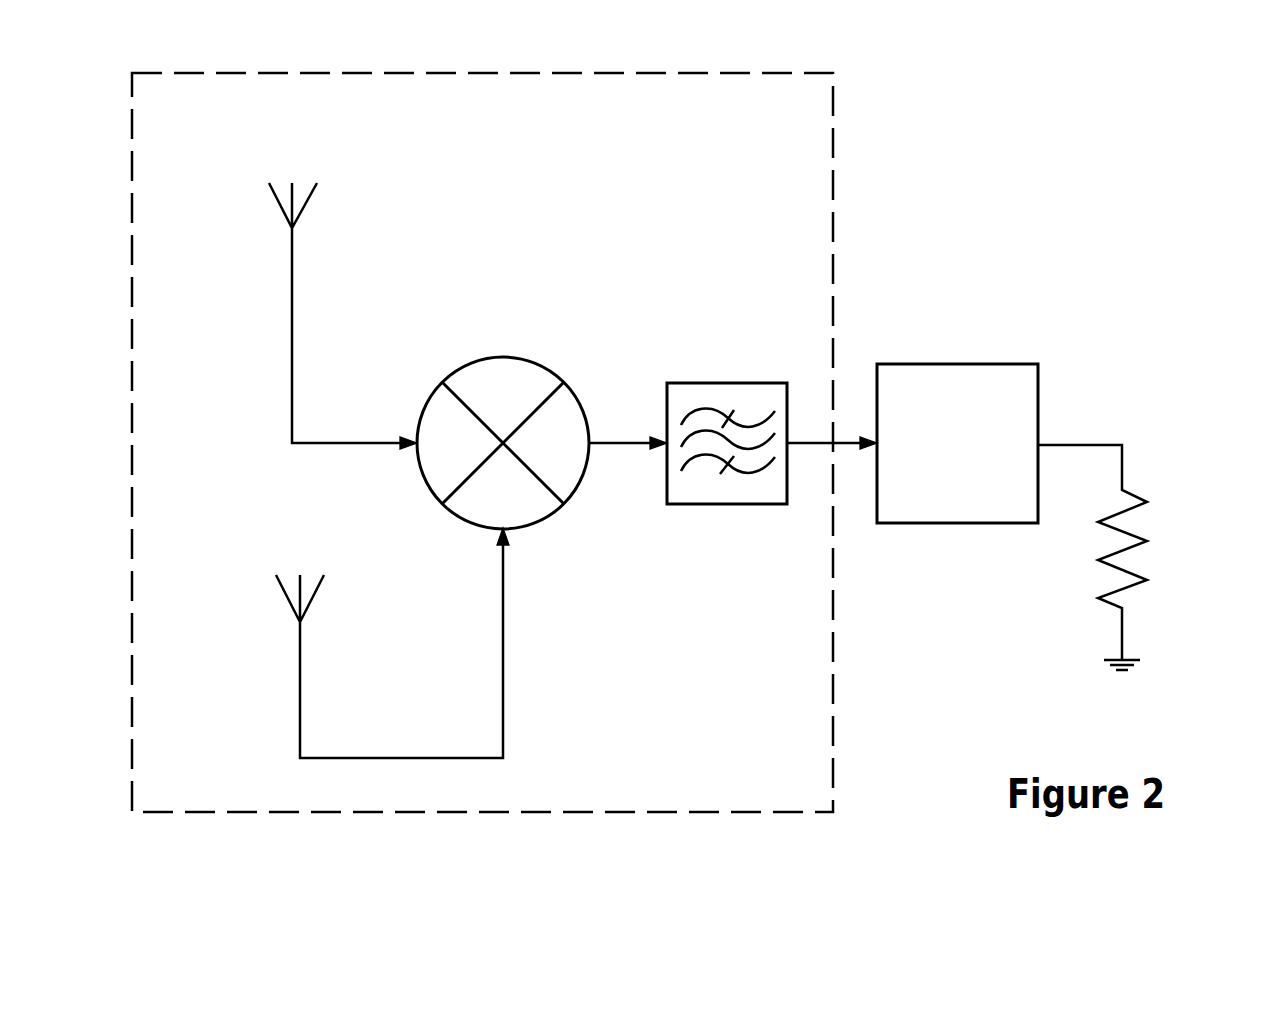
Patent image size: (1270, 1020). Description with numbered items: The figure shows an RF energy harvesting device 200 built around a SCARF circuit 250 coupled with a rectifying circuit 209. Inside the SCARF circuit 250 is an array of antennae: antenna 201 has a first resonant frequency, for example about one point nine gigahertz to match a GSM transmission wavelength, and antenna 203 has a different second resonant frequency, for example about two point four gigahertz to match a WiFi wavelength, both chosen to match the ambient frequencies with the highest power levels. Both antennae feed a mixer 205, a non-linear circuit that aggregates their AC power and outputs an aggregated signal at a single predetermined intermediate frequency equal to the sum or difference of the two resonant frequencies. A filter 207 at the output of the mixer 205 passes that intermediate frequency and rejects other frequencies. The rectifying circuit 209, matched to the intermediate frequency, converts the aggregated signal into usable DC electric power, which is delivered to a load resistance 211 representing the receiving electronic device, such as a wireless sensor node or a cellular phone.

The energy harvesting device 200 is at (1130, 108).
The SCARF circuit 250 is at (808, 121).
The antenna 201 is at (243, 339).
The antenna 203 is at (245, 706).
The mixer 205 is at (525, 337).
The filter 207 is at (756, 356).
The rectifying circuit 209 is at (985, 489).
The load resistance 211 is at (1220, 592).